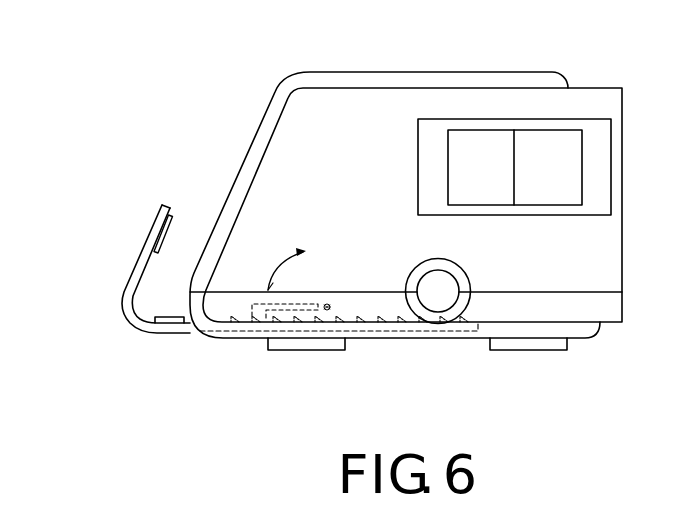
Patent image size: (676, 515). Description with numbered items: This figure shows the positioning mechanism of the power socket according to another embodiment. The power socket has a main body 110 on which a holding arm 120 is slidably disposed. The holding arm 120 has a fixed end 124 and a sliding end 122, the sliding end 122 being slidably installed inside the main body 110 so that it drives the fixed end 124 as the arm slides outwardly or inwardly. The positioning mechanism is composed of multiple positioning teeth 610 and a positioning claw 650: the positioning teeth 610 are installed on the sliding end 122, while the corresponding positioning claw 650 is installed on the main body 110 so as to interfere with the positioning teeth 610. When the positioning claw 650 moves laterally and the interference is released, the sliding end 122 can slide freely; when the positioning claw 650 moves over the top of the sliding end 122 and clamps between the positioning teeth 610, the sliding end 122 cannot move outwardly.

The main body 110 is at (253, 130).
The holding arm 120 is at (130, 326).
The sliding end 122 is at (184, 334).
The fixed end 124 is at (142, 242).
The positioning teeth 610 is at (255, 320).
The positioning claw 650 is at (309, 303).